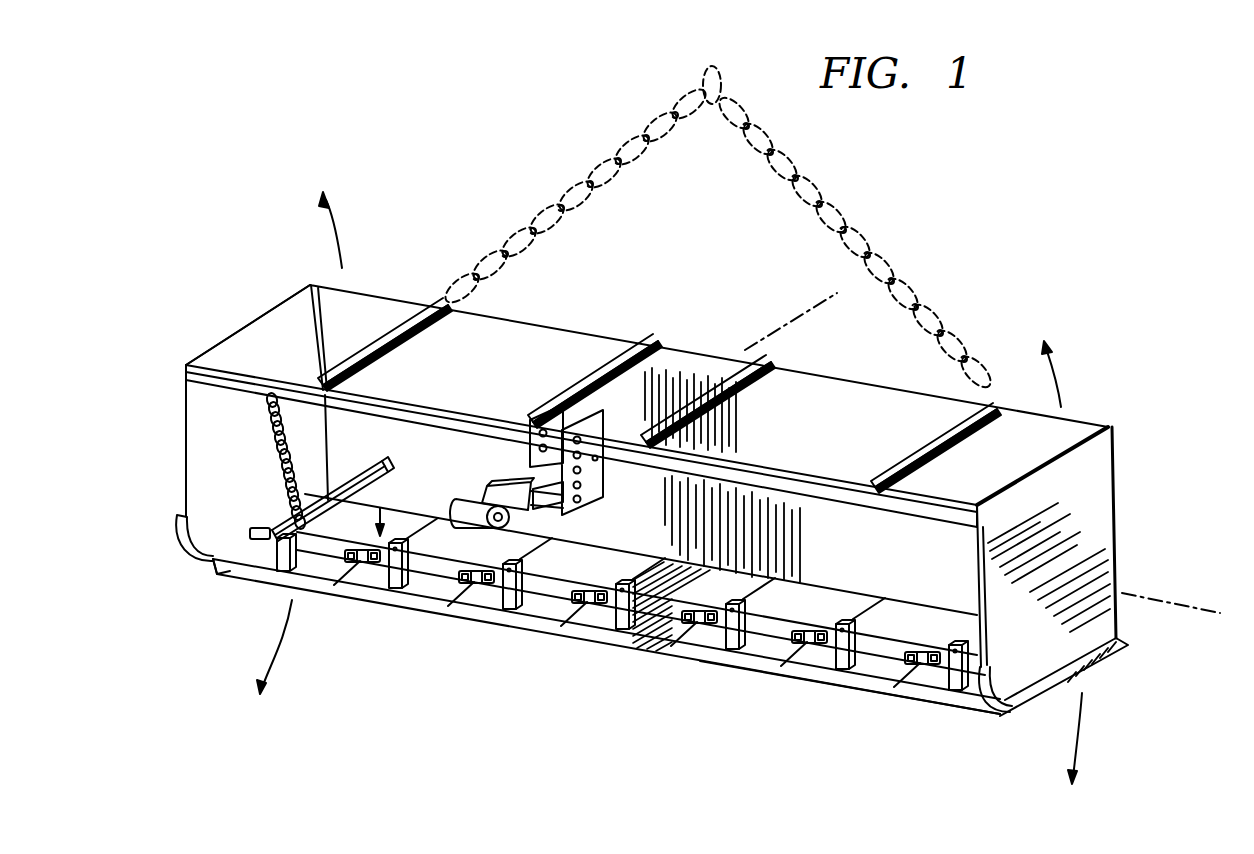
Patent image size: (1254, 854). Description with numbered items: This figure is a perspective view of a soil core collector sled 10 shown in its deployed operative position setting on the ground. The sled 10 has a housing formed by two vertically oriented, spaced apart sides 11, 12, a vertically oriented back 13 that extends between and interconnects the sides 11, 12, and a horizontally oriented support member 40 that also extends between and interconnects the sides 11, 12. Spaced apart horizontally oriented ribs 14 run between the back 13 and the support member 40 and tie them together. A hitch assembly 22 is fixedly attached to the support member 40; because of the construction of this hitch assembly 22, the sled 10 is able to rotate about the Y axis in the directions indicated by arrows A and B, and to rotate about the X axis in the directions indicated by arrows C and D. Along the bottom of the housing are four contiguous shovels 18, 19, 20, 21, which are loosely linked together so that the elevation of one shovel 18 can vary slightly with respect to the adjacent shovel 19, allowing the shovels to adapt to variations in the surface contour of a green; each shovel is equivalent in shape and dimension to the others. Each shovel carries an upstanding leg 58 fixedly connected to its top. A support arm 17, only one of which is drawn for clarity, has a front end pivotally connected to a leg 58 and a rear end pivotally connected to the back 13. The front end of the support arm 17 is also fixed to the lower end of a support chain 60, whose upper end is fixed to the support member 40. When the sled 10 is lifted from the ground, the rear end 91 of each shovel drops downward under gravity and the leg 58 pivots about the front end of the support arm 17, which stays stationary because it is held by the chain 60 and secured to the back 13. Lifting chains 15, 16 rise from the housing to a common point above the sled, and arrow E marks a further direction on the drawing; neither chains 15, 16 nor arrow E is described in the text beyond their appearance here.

The soil core collector sled 10 is at (1108, 417).
The side 11 is at (1113, 452).
The side 12 is at (227, 338).
The back 13 is at (620, 342).
The ribs 14 is at (580, 388).
The left lifting chain 15 is at (567, 197).
The right lifting chain 16 is at (850, 228).
The support arm 17 is at (343, 490).
The shovel 18 is at (235, 568).
The shovel 19 is at (393, 608).
The shovel 20 is at (497, 622).
The shovel 21 is at (817, 681).
The hitch assembly 22 is at (457, 500).
The support member 40 is at (217, 362).
The leg 58 is at (250, 540).
The support chain 60 is at (296, 470).
The rear end 91 is at (608, 560).
The arrow A is at (1058, 375).
The arrow B is at (1080, 748).
The arrow C is at (340, 242).
The arrow D is at (277, 663).
The direction arrow E is at (380, 508).
The X axis X is at (1207, 605).
The Y axis Y is at (753, 320).